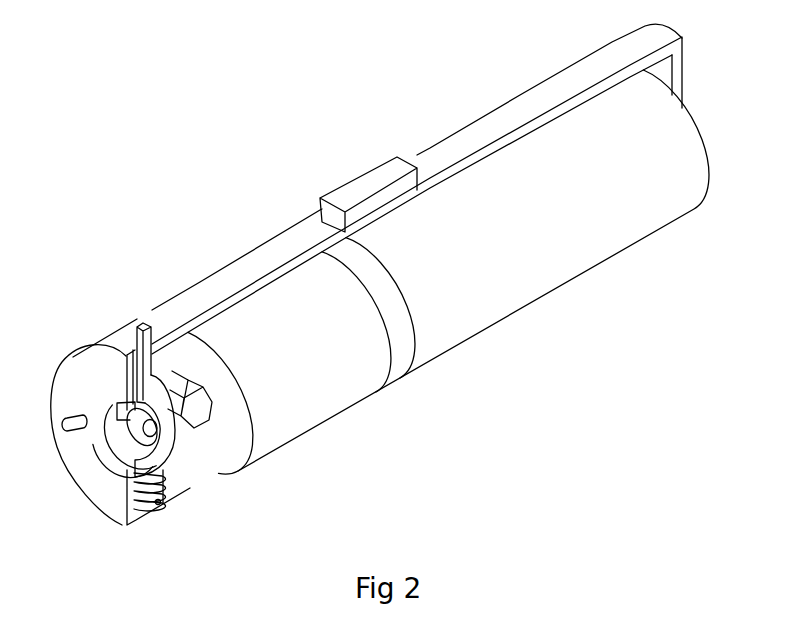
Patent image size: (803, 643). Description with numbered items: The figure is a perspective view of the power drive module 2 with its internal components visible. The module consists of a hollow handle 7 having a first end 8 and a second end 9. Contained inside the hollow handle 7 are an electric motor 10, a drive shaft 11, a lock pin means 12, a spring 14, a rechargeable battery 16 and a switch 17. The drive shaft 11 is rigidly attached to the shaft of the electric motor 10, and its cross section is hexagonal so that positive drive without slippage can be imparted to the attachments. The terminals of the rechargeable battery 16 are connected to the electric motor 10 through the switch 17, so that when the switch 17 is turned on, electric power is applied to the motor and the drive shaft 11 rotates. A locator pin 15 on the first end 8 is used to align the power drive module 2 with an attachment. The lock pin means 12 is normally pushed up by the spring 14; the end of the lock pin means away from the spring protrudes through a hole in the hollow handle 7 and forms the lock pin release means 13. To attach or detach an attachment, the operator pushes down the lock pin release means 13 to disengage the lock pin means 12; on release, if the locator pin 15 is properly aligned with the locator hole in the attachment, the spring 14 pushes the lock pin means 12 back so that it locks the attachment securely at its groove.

The power drive module 2 is at (238, 237).
The hollow handle 7 is at (521, 121).
The first end 8 is at (83, 487).
The second end 9 is at (682, 75).
The electric motor 10 is at (332, 417).
The drive shaft 11 is at (196, 418).
The lock pin means 12 is at (166, 470).
The lock pin release means 13 is at (144, 325).
The spring 14 is at (158, 501).
The locator pin 15 is at (68, 416).
The rechargeable battery 16 is at (487, 328).
The switch 17 is at (400, 157).